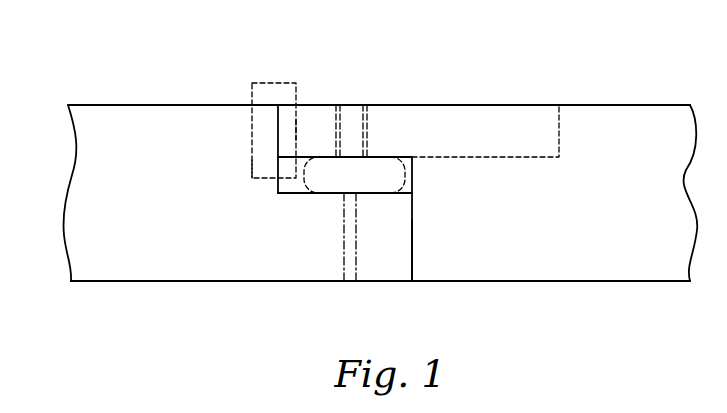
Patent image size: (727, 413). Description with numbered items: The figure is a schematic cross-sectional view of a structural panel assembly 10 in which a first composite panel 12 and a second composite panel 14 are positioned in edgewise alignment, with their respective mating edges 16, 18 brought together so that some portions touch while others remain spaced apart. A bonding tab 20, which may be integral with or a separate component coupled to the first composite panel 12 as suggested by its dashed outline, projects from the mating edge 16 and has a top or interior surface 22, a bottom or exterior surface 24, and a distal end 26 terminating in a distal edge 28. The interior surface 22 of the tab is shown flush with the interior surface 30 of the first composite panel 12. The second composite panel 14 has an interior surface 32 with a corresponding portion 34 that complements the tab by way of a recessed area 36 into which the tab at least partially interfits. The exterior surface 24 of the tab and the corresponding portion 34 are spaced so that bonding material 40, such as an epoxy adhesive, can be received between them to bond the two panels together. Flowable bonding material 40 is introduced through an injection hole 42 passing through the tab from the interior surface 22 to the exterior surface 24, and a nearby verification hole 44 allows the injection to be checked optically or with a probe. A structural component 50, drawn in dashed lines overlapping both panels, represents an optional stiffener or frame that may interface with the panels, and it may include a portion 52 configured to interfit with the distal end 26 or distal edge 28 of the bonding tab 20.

The structural panel assembly 10 is at (130, 48).
The first composite panel 12 is at (563, 287).
The second composite panel 14 is at (148, 283).
The mating edge 16 is at (409, 260).
The mating edge 18 is at (415, 250).
The bonding tab 20 is at (443, 82).
The interior surface 22 is at (473, 103).
The exterior surface 24 is at (392, 158).
The distal end 26 is at (306, 103).
The distal edge 28 is at (272, 135).
The interior surface 30 is at (645, 103).
The interior surface 32 is at (232, 103).
The corresponding portion 34 is at (267, 193).
The recessed area 36 is at (281, 201).
The bonding material 40 is at (332, 198).
The injection hole 42 is at (342, 102).
The verification hole 44 is at (367, 103).
The structural component 50 is at (243, 161).
The portion 52 is at (297, 133).